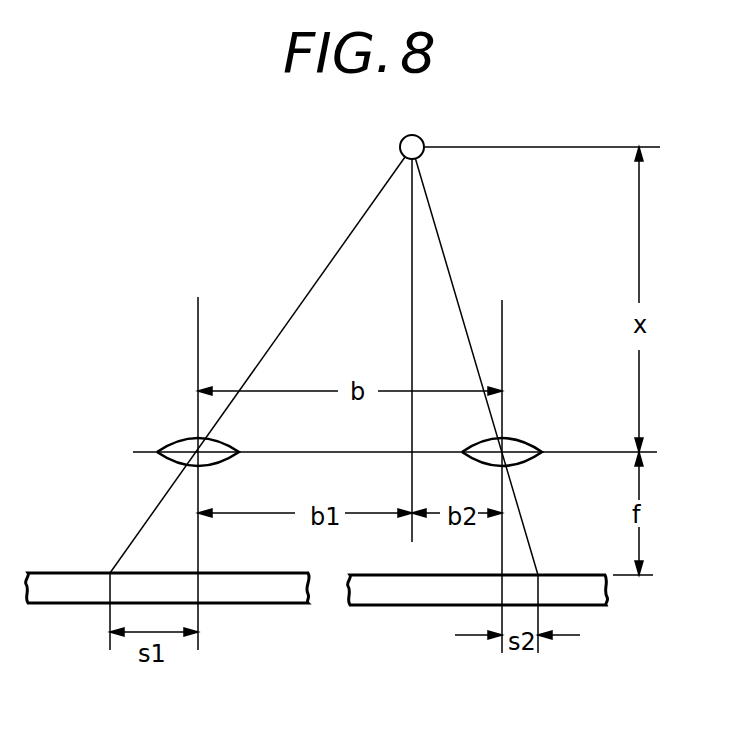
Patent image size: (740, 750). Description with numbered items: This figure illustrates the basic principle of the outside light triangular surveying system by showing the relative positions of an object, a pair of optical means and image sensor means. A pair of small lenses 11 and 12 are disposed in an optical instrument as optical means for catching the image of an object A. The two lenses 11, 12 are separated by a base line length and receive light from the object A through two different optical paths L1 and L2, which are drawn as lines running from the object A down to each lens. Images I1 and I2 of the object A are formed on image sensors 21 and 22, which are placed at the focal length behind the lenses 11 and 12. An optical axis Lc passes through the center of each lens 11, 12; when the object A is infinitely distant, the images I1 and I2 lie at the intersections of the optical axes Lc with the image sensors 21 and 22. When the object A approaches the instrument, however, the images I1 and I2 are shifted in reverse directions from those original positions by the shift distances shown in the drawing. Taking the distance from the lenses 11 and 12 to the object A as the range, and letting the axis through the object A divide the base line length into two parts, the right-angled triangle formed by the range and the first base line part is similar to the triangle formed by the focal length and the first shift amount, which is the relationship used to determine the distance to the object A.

The object A is at (398, 145).
The optical path L1 is at (313, 287).
The optical path L2 is at (455, 275).
The optical axis Lc is at (198, 325).
The small lens 11 is at (168, 438).
The small lens 12 is at (520, 443).
The image sensor 21 is at (50, 604).
The image sensor 22 is at (597, 606).
The image I1 is at (110, 573).
The image I2 is at (538, 575).